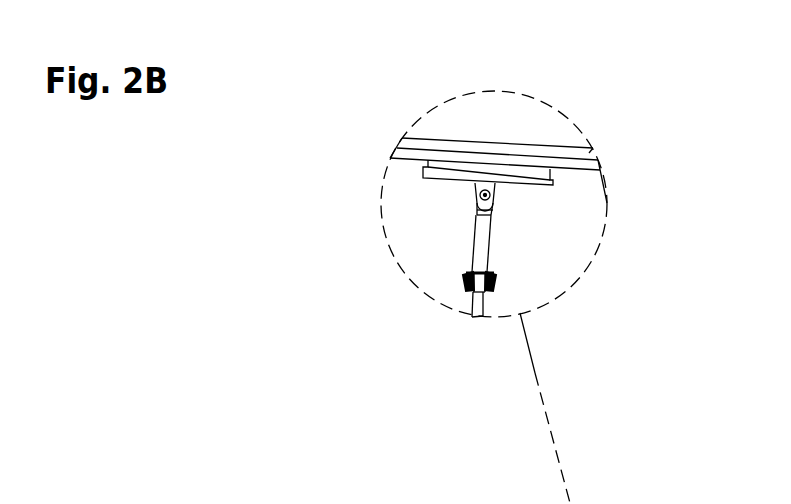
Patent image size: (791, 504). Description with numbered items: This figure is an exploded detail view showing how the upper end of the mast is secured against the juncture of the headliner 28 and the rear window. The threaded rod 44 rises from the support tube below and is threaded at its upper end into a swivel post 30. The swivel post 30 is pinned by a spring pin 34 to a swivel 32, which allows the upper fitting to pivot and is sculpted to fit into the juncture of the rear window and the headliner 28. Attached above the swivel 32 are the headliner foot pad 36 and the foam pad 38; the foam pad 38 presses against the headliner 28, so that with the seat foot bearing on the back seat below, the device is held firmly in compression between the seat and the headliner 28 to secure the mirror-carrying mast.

The headliner 28 is at (461, 115).
The swivel post 30 is at (579, 266).
The swivel 32 is at (542, 112).
The spring pin 34 is at (491, 195).
The headliner foot pad 36 is at (401, 255).
The foam pad 38 is at (410, 183).
The threaded rod 44 is at (444, 311).